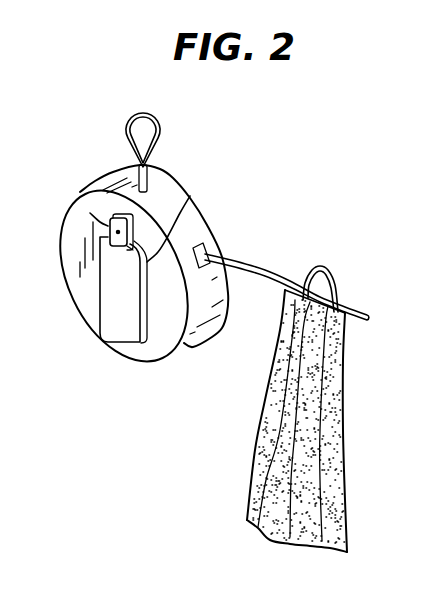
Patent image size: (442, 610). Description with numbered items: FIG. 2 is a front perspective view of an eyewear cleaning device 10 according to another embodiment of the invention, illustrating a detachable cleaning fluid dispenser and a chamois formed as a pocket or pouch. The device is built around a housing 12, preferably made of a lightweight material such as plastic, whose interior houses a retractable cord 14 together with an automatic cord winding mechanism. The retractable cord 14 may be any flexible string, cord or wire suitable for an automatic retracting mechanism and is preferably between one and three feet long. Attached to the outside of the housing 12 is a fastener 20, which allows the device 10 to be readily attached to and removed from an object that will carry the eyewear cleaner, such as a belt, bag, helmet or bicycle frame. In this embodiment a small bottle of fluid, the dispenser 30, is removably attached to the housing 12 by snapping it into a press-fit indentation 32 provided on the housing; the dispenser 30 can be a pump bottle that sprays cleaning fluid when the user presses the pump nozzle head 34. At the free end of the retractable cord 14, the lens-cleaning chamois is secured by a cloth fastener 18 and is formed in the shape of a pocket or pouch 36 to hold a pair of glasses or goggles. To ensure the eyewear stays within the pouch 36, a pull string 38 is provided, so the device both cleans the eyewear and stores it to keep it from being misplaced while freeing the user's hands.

The eyewear cleaning device 10 is at (194, 145).
The housing 12 is at (88, 315).
The retractable cord 14 is at (243, 262).
The cloth fastener 18 is at (284, 292).
The fastener 20 is at (160, 128).
The dispenser 30 is at (105, 250).
The press-fit indentation 32 is at (190, 196).
The pump nozzle head 34 is at (106, 226).
The pocket or pouch 36 is at (257, 438).
The pull string 38 is at (366, 317).